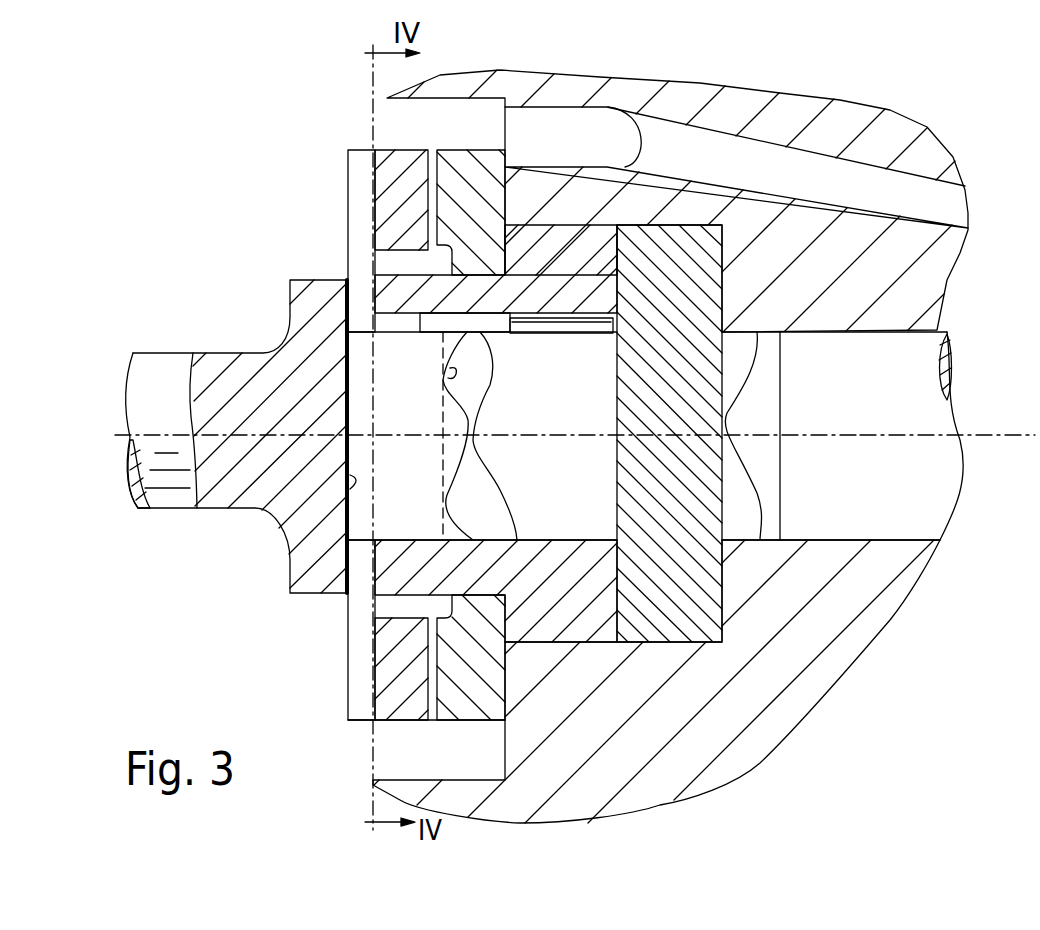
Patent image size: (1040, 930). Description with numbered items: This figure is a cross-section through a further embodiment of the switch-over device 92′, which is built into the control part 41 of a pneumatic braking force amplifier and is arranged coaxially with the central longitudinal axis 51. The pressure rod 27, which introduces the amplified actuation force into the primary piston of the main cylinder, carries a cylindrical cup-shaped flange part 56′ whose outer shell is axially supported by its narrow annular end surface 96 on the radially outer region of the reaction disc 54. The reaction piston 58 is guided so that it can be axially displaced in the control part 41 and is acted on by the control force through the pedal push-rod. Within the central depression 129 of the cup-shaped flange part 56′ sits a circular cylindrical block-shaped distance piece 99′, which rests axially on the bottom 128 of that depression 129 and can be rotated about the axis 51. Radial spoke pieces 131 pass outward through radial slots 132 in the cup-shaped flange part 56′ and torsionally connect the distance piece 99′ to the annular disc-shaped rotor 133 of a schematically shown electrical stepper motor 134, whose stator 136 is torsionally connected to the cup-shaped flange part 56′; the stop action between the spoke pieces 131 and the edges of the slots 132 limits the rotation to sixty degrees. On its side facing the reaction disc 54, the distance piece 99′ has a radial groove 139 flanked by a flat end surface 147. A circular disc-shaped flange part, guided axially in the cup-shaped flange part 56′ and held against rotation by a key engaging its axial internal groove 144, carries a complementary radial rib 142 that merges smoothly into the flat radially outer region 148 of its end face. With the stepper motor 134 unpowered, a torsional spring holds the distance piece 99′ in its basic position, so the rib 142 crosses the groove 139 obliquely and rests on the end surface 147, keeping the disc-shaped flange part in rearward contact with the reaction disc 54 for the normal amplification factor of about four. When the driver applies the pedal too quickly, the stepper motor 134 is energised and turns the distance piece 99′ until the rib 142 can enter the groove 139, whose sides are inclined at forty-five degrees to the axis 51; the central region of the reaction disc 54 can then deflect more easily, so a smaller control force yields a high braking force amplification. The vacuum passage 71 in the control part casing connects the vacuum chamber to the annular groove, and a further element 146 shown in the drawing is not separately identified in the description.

The switch-over device 92′ is at (172, 195).
The bottom of the central depression 128 is at (250, 513).
The pressure rod 27 is at (162, 477).
The radial groove 139 is at (400, 360).
The distance piece 99′ is at (443, 387).
The radial spoke pieces 131 is at (358, 172).
The radial slots 132 is at (350, 265).
The stepper motor 134 is at (405, 138).
The stator 136 is at (470, 172).
The central depression 129 is at (437, 305).
The rotor 133 is at (393, 712).
The washer 146 is at (553, 334).
The flat radially outer region of the end surface 148 is at (505, 362).
The axial internal groove 144 is at (553, 302).
The flat end surface 147 is at (498, 398).
The radial rib 142 is at (480, 445).
The reaction disc 54 is at (710, 590).
The vacuum passage 71 is at (683, 147).
The cup-shaped flange part 56′ is at (640, 178).
The control part 41 is at (952, 317).
The reaction piston 58 is at (887, 500).
The central longitudinal axis 51 is at (985, 437).
The annular end surface 96 is at (607, 622).